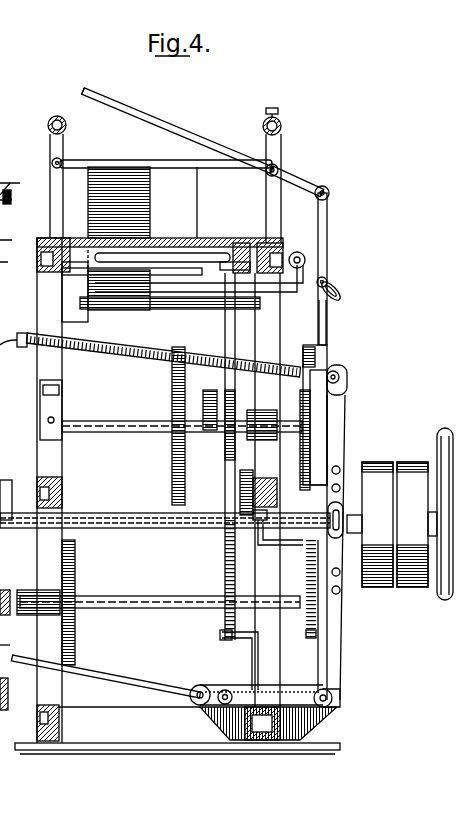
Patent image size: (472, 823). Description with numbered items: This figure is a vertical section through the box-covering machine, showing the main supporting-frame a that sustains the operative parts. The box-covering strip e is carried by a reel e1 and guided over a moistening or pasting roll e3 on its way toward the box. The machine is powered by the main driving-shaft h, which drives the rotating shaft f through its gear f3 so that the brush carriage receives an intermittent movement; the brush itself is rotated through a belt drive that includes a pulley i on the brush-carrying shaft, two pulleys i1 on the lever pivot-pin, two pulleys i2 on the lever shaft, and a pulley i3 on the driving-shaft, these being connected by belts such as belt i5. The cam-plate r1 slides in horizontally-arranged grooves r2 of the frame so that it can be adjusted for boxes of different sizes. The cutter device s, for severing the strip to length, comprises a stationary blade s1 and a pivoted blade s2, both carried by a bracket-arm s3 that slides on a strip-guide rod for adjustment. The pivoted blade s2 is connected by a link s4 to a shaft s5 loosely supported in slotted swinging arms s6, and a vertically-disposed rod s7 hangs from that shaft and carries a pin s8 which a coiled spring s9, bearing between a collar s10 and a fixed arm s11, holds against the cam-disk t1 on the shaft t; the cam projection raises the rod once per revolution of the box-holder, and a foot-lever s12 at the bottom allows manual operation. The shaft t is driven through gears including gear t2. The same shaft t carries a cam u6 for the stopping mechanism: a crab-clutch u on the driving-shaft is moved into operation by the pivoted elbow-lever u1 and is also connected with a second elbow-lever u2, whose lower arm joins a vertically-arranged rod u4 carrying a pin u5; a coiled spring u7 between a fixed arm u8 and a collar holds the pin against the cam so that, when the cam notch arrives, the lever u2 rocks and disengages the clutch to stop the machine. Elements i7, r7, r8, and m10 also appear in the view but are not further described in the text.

The main supporting-frame a is at (278, 355).
The cutter device s is at (177, 130).
The stationary blade s1 is at (163, 140).
The pivoted blade s2 is at (187, 133).
The bracket-arm s3 is at (281, 143).
The link s4 is at (328, 238).
The shaft s5 is at (327, 278).
The slotted swinging arm s6 is at (333, 295).
The vertically-disposed rod s7 is at (326, 327).
The pin s8 is at (327, 347).
The coiled spring s9 is at (340, 615).
The collar s10 is at (308, 635).
The fixed arm s11 is at (303, 547).
The foot-lever s12 is at (95, 672).
The pulley i is at (8, 186).
The pulleys i1 is at (0, 250).
The pulleys i2 is at (6, 705).
The pulley i3 is at (0, 502).
The belt i5 is at (150, 355).
The post i7 is at (28, 221).
The box-covering strip e is at (195, 402).
The reel e1 is at (45, 400).
The moistening or pasting roll e3 is at (161, 294).
The cam-plate r1 is at (197, 238).
The grooves r2 is at (240, 243).
The rod r7 is at (205, 283).
The pivot r8 is at (302, 288).
The shaft t is at (138, 428).
The cam-disk t1 is at (310, 400).
The gear t2 is at (170, 483).
The crab-clutch u is at (317, 517).
The pivoted elbow-lever u1 is at (338, 420).
The second elbow-lever u2 is at (330, 663).
The vertically-arranged rod u4 is at (223, 660).
The pin u5 is at (233, 500).
The cam u6 is at (232, 462).
The coiled spring u7 is at (228, 562).
The fixed arm u8 is at (220, 635).
The main driving-shaft h is at (153, 525).
The rotating shaft f is at (147, 608).
The gear f3 is at (75, 577).
The bracket m10 is at (12, 634).